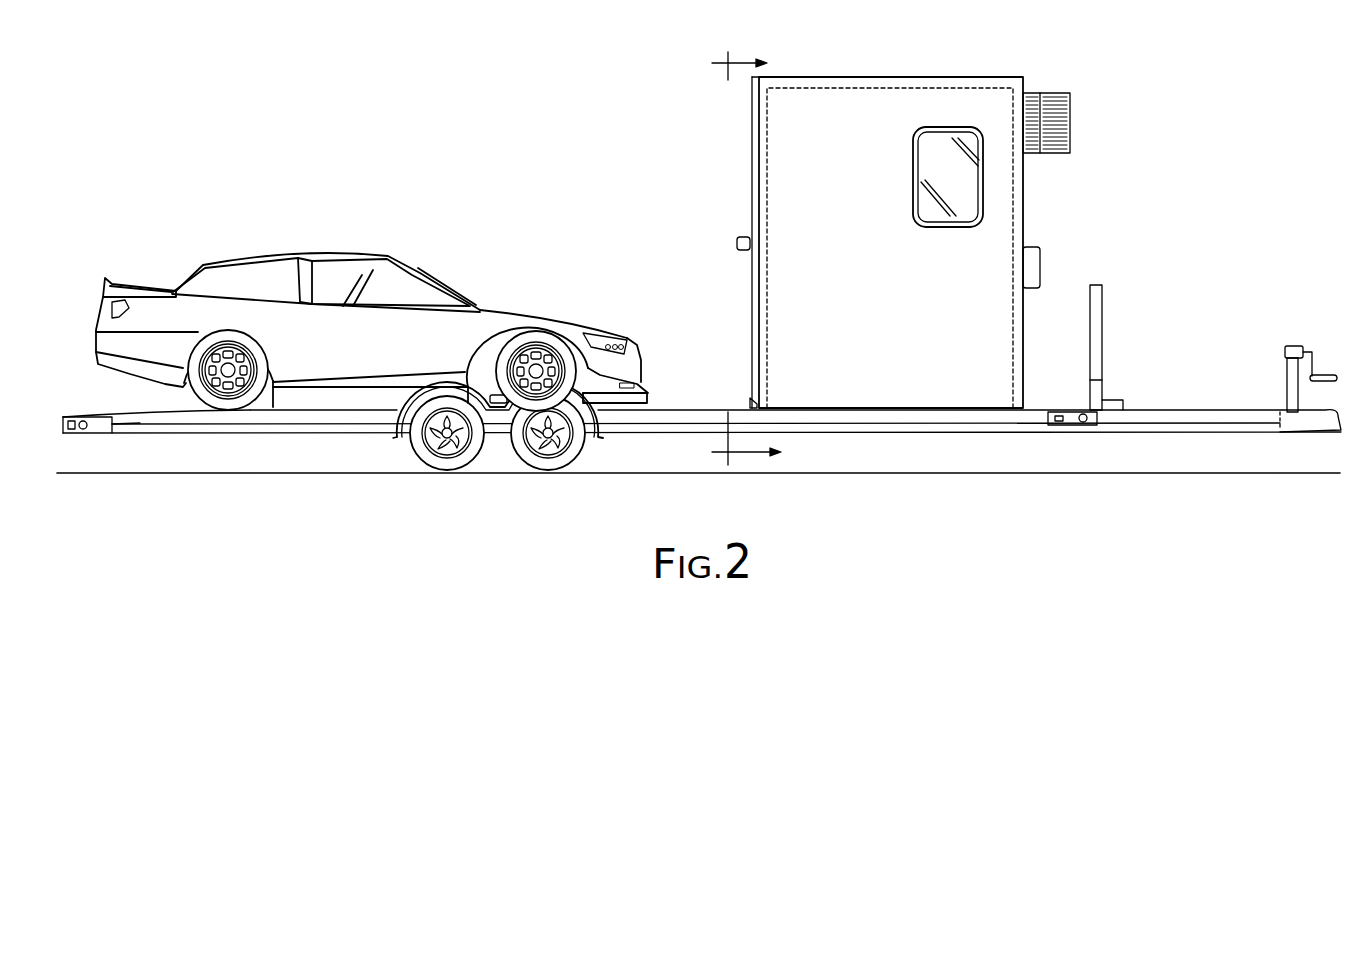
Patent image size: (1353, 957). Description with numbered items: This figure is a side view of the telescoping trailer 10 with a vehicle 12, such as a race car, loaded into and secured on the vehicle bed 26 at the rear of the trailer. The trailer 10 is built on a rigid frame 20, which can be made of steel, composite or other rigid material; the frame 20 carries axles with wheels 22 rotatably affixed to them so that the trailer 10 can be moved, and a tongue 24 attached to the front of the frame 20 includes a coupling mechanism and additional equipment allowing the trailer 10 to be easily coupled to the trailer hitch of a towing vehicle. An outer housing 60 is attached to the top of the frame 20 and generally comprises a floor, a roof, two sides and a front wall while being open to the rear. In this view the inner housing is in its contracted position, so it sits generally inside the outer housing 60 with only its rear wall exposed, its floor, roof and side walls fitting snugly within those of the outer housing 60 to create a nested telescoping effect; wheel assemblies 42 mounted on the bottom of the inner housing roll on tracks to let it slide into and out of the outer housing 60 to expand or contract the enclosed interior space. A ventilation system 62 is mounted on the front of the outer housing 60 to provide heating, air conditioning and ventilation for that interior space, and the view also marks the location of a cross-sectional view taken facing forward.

The telescoping trailer 10 is at (573, 216).
The vehicle 12 is at (252, 252).
The frame 20 is at (660, 417).
The wheels 22 is at (413, 440).
The tongue 24 is at (1158, 412).
The bed 26 is at (318, 412).
The wheel assemblies 42 is at (749, 404).
The outer housing 60 is at (845, 132).
The ventilation system 62 is at (1050, 93).